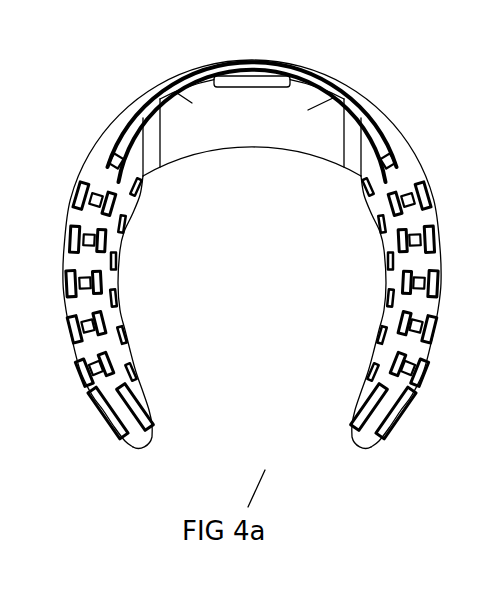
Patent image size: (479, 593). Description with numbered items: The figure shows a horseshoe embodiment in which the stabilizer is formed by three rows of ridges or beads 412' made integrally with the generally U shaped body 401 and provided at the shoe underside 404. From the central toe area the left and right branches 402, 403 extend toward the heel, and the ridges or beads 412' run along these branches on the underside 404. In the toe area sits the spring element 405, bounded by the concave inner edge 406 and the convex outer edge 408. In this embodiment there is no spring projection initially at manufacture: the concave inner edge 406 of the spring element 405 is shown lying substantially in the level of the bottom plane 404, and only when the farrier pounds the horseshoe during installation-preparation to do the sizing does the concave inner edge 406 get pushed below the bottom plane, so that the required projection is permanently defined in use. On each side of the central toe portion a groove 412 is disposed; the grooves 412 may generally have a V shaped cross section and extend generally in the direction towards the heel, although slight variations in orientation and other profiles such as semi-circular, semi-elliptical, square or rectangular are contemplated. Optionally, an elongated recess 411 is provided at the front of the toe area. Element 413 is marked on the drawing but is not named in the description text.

The generally U shaped body 401 is at (418, 175).
The left branch 402 is at (152, 443).
The right branch 403 is at (357, 444).
The shoe underside 404 is at (416, 244).
The spring element 405 is at (345, 100).
The concave inner edge 406 is at (241, 149).
The convex outer edge 408 is at (163, 86).
The elongated recess 411 is at (253, 77).
The grooves 412 is at (252, 253).
The ridges or beads 412' is at (252, 279).
The band 413 is at (233, 61).